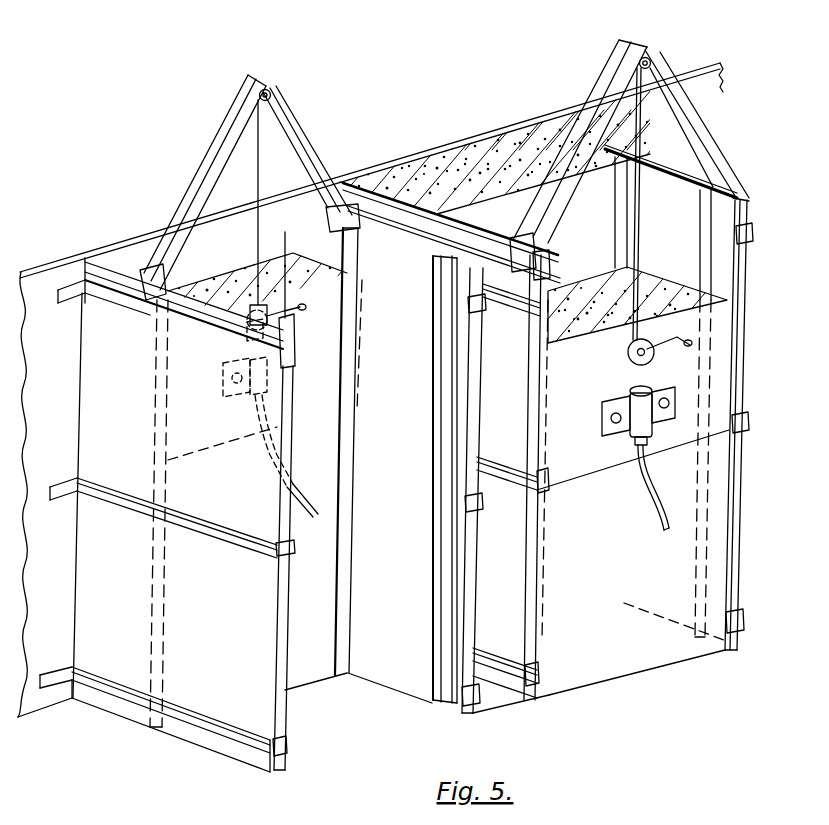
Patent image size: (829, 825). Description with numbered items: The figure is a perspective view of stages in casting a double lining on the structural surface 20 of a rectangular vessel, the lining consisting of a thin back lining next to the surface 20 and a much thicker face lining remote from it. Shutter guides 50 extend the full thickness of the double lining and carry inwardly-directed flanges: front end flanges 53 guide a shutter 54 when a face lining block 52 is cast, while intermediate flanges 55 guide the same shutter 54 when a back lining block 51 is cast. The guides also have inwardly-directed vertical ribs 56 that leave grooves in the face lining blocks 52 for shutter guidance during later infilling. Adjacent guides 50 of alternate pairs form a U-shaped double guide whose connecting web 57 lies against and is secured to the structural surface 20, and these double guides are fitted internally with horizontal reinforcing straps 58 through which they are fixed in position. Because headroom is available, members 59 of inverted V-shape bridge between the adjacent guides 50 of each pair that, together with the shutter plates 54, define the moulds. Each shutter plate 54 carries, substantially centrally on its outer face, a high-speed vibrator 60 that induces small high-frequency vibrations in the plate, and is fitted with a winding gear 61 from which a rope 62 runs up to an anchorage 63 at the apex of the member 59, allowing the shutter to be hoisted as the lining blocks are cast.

The structural surface 20 is at (45, 494).
The shutter guide 50 is at (452, 429).
The back lining block 51 is at (231, 279).
The face lining block 52 is at (666, 288).
The front end flange 53 is at (286, 720).
The shutter 54 is at (476, 418).
The intermediate flange 55 is at (160, 660).
The vertical rib 56 is at (432, 658).
The connecting web 57 is at (312, 197).
The horizontal reinforcing strap 58 is at (127, 306).
The member of inverted V-shape 59 is at (313, 161).
The high-speed vibrator 60 is at (270, 382).
The winding gear 61 is at (290, 318).
The rope 62 is at (263, 140).
The anchorage 63 is at (273, 92).